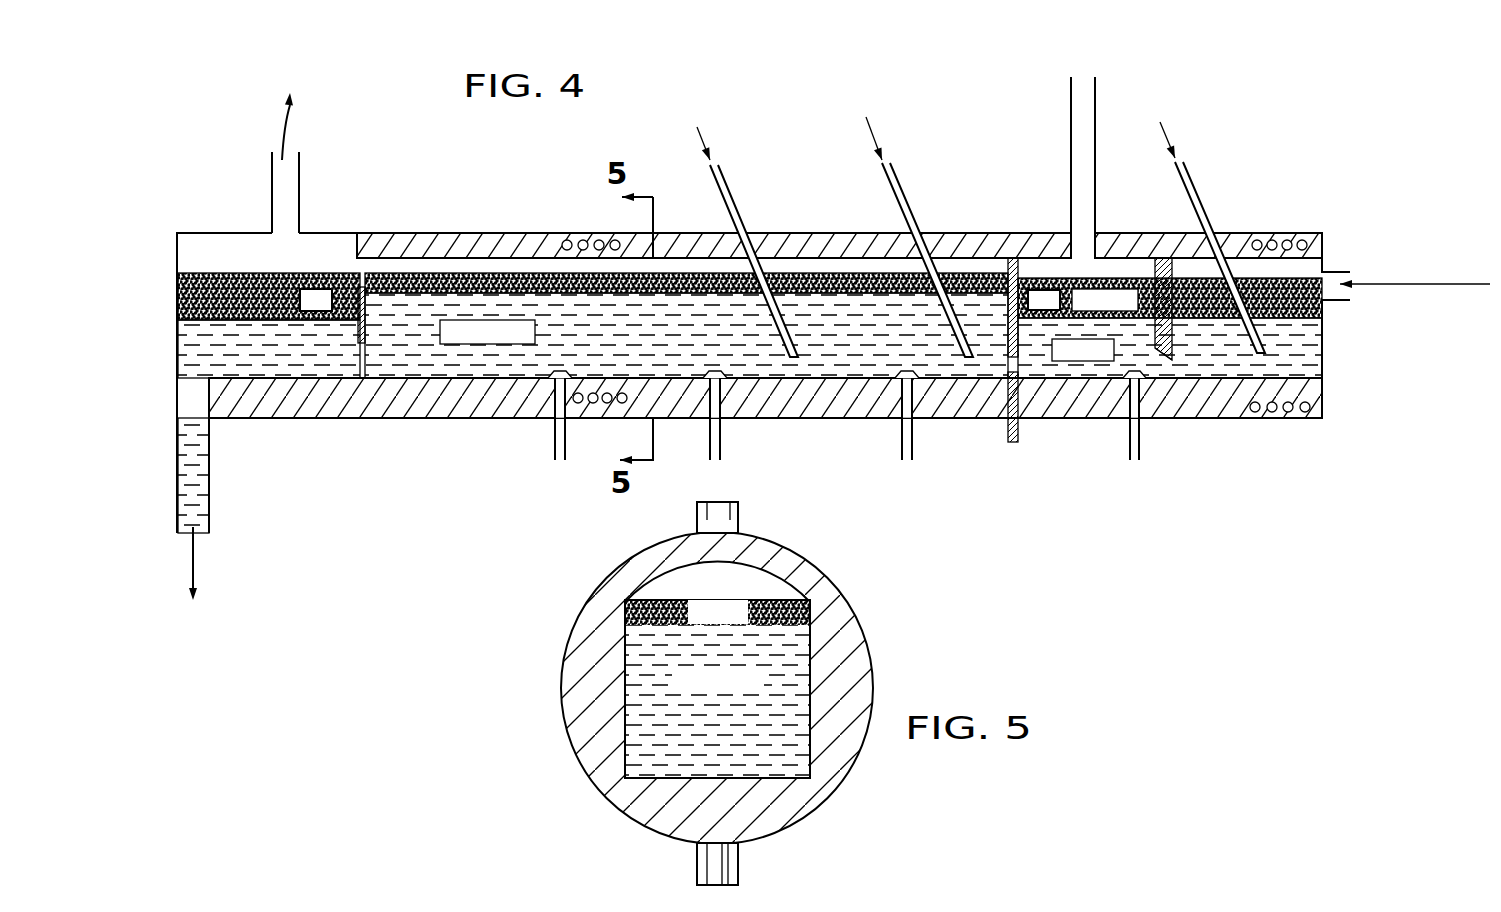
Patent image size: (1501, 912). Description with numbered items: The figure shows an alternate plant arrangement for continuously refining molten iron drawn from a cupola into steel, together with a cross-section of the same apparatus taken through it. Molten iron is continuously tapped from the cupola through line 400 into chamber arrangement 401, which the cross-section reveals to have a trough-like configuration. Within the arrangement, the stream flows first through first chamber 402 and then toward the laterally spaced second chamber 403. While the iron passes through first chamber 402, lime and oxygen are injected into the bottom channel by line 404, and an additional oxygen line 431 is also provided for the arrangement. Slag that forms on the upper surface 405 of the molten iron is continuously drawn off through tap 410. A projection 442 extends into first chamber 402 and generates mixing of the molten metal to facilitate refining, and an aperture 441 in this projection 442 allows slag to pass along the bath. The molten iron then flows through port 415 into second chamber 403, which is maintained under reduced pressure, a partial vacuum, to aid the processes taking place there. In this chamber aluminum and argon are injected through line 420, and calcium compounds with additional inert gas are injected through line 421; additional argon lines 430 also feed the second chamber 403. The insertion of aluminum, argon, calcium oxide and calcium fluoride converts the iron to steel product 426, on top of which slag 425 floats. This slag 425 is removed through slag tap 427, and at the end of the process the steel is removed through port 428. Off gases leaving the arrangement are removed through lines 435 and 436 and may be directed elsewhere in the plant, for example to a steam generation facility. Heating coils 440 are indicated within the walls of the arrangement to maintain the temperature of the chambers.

In FIG. 4, the line 400 is at (1337, 273).
In FIG. 4, the chamber arrangement 401 is at (1332, 367).
In FIG. 5, the chamber arrangement 401 is at (563, 733).
In FIG. 4, the first chamber 402 is at (1118, 378).
In FIG. 4, the second chamber 403 is at (873, 377).
In FIG. 5, the second chamber 403 is at (683, 778).
In FIG. 4, the line 404 is at (1202, 200).
In FIG. 4, the upper surface 405 is at (1187, 320).
In FIG. 4, the tap 410 is at (1040, 290).
In FIG. 4, the port 415 is at (1017, 365).
In FIG. 4, the line 420 is at (908, 203).
In FIG. 4, the line 421 is at (735, 203).
In FIG. 4, the slag 425 is at (202, 278).
In FIG. 4, the steel product 426 is at (363, 362).
In FIG. 4, the slag tap 427 is at (318, 288).
In FIG. 4, the port 428 is at (209, 512).
In FIG. 4, the argon lines 430 is at (552, 445).
In FIG. 4, the oxygen line 431 is at (1140, 437).
In FIG. 4, the line 435 is at (1071, 125).
In FIG. 4, the line 436 is at (270, 178).
In FIG. 4, the heating coils 440 is at (567, 237).
In FIG. 4, the aperture 441 is at (1155, 273).
In FIG. 4, the projection 442 is at (1175, 347).